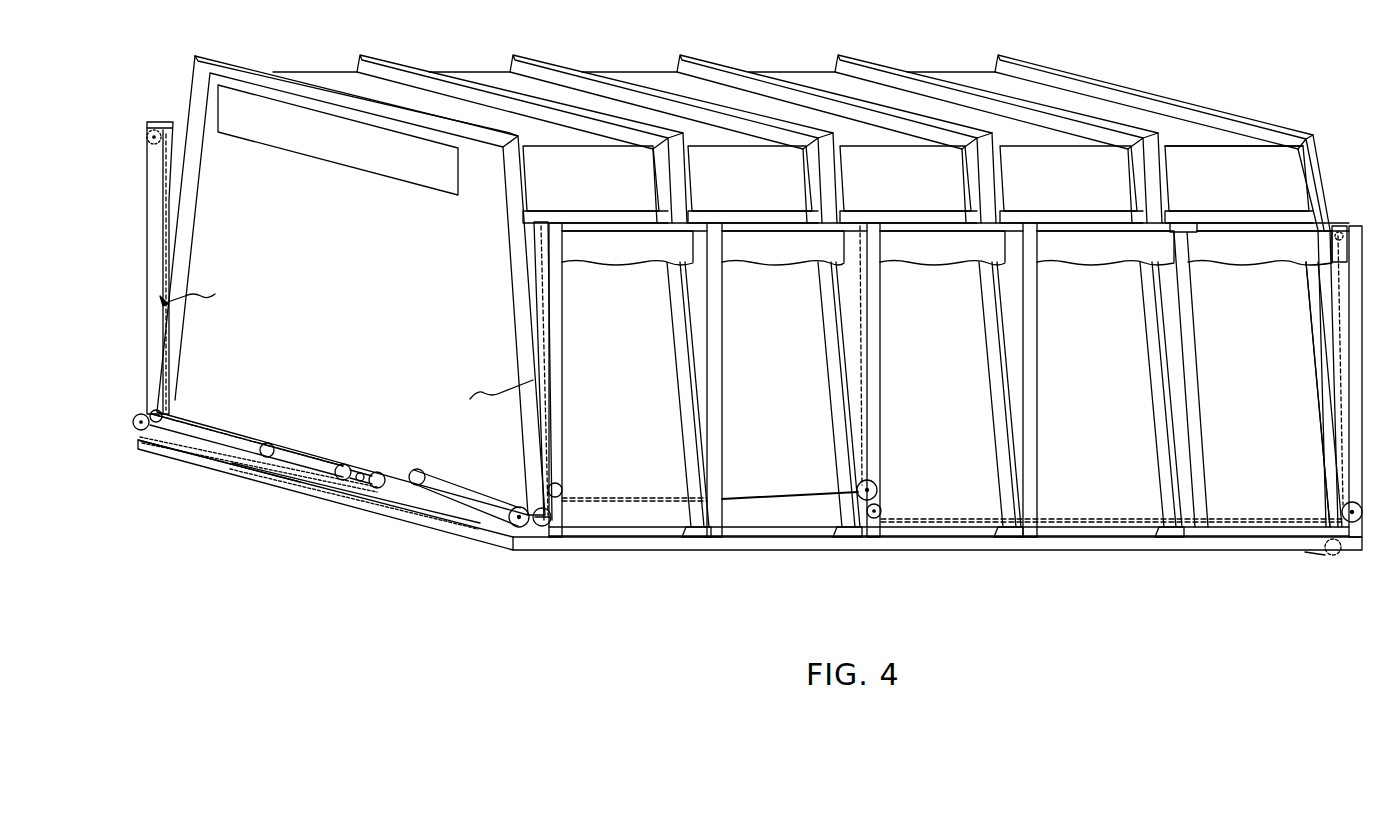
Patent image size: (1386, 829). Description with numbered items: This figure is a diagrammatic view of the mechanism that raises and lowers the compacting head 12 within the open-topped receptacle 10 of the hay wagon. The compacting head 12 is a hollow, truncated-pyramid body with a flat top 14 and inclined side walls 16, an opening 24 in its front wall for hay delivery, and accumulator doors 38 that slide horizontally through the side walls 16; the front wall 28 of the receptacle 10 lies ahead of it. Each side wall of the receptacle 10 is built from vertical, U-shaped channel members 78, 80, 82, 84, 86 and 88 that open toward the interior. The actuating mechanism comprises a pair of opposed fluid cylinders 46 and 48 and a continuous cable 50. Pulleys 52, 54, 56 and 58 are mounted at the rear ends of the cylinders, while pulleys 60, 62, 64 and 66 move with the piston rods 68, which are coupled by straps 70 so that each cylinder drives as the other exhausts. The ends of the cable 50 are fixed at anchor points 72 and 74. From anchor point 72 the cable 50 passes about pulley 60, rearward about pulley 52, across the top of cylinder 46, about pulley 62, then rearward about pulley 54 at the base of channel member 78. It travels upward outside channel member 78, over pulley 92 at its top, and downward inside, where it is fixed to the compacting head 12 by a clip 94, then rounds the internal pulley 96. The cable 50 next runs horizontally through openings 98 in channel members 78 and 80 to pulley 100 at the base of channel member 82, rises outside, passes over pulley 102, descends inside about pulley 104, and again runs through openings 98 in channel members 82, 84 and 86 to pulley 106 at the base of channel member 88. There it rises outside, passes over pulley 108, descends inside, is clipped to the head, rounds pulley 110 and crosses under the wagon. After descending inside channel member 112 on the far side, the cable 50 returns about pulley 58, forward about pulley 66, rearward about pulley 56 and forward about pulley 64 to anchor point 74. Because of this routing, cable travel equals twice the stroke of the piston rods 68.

The receptacle 10 is at (1113, 546).
The compacting head 12 is at (1322, 136).
The top 14 is at (796, 66).
The side walls 16 is at (1255, 156).
The opening 24 is at (356, 167).
The front wall 28 is at (351, 285).
The accumulator doors 38 is at (602, 210).
The fluid cylinder 46 is at (455, 492).
The fluid cylinder 48 is at (220, 424).
The continuous cable 50 is at (634, 494).
The pulley 52 is at (516, 527).
The pulley 54 is at (545, 527).
The pulley 56 is at (133, 414).
The pulley 58 is at (166, 416).
The pulley 60 is at (375, 488).
The pulley 62 is at (420, 470).
The pulley 64 is at (340, 480).
The pulley 66 is at (366, 474).
The piston rods 68 is at (318, 467).
The straps 70 is at (358, 470).
The anchor point 72 is at (470, 526).
The anchor point 74 is at (200, 456).
The channel member 78 is at (570, 303).
The channel member 80 is at (735, 303).
The channel member 82 is at (891, 303).
The channel member 84 is at (1046, 303).
The channel member 86 is at (1213, 303).
The channel member 88 is at (1340, 326).
The pulley 92 is at (540, 232).
The clip 94 is at (346, 350).
The pulley 96 is at (562, 492).
The openings 98 is at (710, 500).
The pulley 100 is at (876, 486).
The pulley 102 is at (856, 228).
The pulley 104 is at (882, 510).
The pulley 106 is at (1343, 510).
The pulley 108 is at (1334, 224).
The pulley 110 is at (1340, 560).
The channel member 112 is at (147, 122).